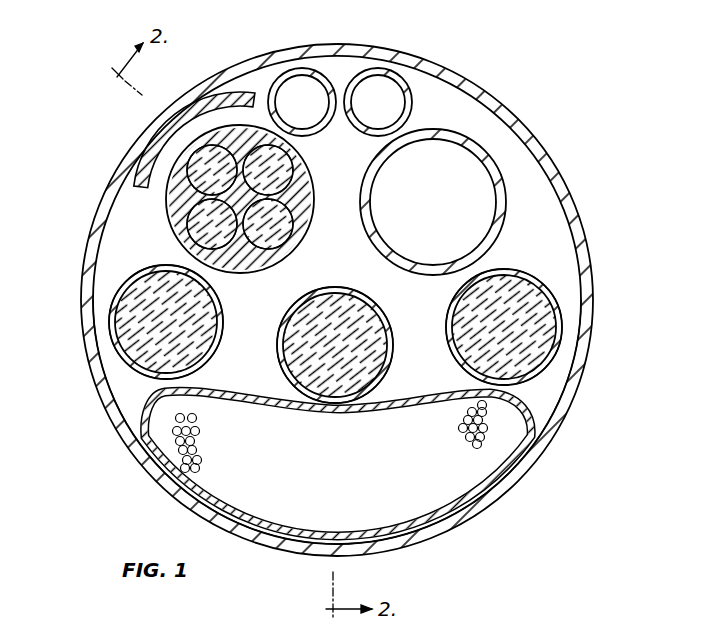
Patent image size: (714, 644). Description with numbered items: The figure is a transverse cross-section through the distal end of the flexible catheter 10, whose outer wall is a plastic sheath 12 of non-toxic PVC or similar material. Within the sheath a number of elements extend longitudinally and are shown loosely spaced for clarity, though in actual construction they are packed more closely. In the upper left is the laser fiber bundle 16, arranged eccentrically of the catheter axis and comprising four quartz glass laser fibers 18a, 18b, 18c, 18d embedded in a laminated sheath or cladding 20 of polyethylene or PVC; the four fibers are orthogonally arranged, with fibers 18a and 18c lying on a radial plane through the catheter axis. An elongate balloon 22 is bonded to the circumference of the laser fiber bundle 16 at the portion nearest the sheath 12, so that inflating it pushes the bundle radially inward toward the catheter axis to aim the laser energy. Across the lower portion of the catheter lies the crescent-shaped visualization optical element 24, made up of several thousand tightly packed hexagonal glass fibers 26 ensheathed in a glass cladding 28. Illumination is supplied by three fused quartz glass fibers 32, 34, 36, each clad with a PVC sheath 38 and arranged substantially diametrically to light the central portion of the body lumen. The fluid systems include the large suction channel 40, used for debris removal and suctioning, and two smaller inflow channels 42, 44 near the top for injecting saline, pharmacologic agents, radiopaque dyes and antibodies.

The flexible catheter 10 is at (548, 108).
The plastic sheath 12 is at (578, 298).
The laser fiber bundle 16 is at (168, 207).
The laser fiber 18a is at (191, 190).
The laser fiber 18b is at (288, 168).
The laser fiber 18c is at (284, 228).
The laser fiber 18d is at (232, 242).
The laminated sheath or cladding 20 is at (300, 198).
The elongate balloon 22 is at (227, 103).
The visualization optical element 24 is at (530, 406).
The glass fibers 26 is at (198, 438).
The glass cladding 28 is at (504, 488).
The illuminating fiber 32 is at (198, 343).
The illuminating fiber 34 is at (373, 357).
The illuminating fiber 36 is at (462, 310).
The PVC sheath 38 is at (108, 328).
The suction channel 40 is at (503, 224).
The inflow channel 42 is at (380, 72).
The inflow channel 44 is at (303, 72).